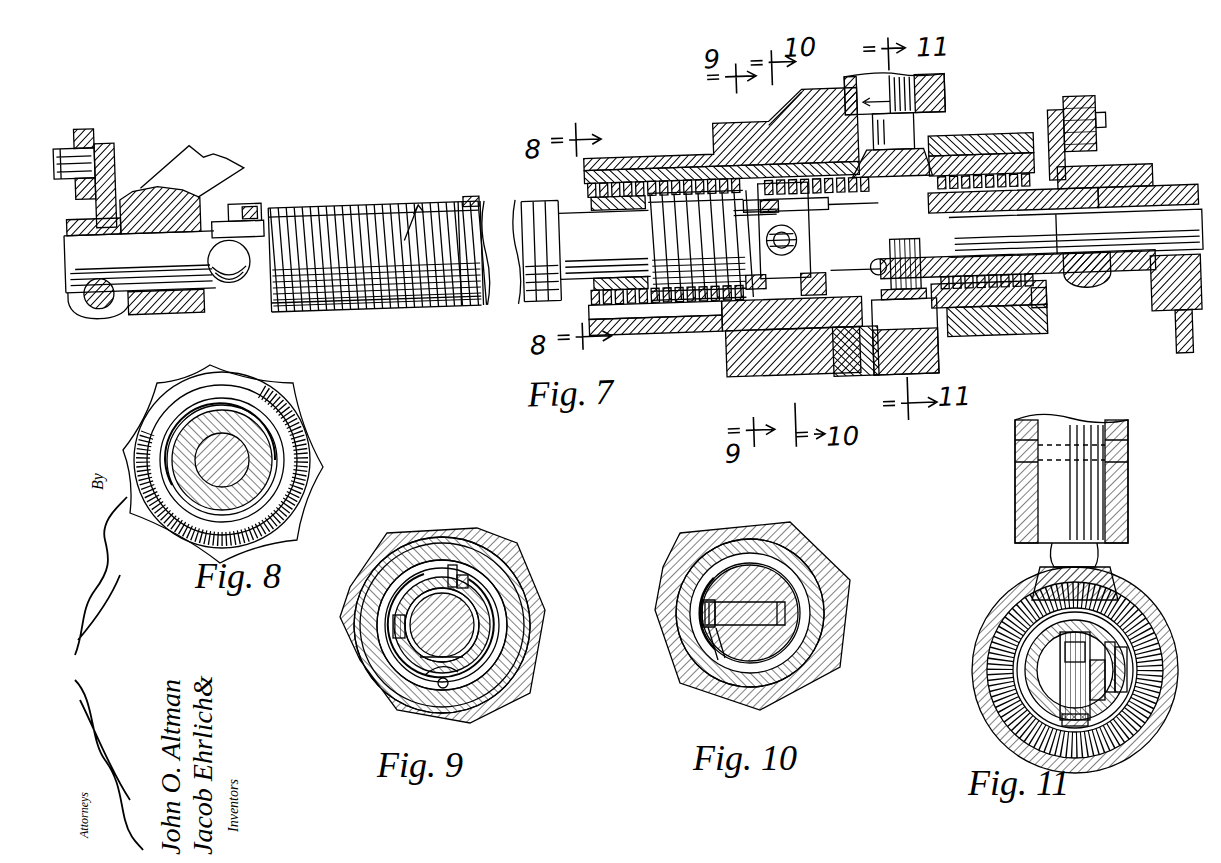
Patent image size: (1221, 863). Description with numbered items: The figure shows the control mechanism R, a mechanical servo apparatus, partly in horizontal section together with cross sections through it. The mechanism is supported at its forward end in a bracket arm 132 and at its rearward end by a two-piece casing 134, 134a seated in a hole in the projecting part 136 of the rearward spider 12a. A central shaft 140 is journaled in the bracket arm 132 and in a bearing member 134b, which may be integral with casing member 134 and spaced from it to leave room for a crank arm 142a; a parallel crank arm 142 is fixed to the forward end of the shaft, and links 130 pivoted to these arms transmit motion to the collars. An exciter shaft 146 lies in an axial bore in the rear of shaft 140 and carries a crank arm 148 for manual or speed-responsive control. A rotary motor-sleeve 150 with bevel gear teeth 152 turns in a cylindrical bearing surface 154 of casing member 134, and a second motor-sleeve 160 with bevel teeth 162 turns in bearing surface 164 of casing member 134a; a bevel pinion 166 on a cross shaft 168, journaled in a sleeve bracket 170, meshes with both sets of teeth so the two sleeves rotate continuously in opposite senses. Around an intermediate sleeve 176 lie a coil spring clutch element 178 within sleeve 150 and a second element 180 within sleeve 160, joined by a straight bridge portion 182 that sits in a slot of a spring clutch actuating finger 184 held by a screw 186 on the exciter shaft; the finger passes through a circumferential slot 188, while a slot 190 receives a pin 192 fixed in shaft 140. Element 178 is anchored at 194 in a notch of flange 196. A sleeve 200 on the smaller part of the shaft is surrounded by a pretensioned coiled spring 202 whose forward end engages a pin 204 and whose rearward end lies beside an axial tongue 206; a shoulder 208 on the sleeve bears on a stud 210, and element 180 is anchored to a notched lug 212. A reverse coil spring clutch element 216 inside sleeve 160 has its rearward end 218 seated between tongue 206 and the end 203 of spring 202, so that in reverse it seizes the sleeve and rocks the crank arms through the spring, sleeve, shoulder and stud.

In FIG. 7, the rearward spider 12a is at (850, 365).
In FIG. 7, the link 130 is at (90, 128).
In FIG. 7, the bracket arm 132 is at (158, 200).
In FIG. 7, the casing member 134 is at (1040, 330).
In FIG. 11, the casing member 134 is at (1160, 598).
In FIG. 7, the casing member 134a is at (745, 372).
In FIG. 9, the casing member 134a is at (492, 552).
In FIG. 10, the casing member 134a is at (690, 575).
In FIG. 7, the bearing member 134b is at (1140, 228).
In FIG. 7, the projecting part 136 is at (715, 150).
In FIG. 8, the projecting part 136 is at (280, 385).
In FIG. 9, the projecting part 136 is at (500, 700).
In FIG. 10, the projecting part 136 is at (835, 675).
In FIG. 7, the central shaft 140 is at (180, 272).
In FIG. 8, the central shaft 140 is at (240, 460).
In FIG. 9, the central shaft 140 is at (425, 640).
In FIG. 10, the central shaft 140 is at (775, 597).
In FIG. 11, the central shaft 140 is at (1030, 655).
In FIG. 7, the crank arm 142 is at (110, 150).
In FIG. 7, the crank arm 142a is at (1060, 141).
In FIG. 7, the exciter shaft 146 is at (1165, 320).
In FIG. 11, the exciter shaft 146 is at (1052, 668).
In FIG. 7, the crank arm 148 is at (1182, 388).
In FIG. 7, the rotary motor-sleeve 150 is at (1020, 364).
In FIG. 7, the bevel gear teeth 152 is at (990, 335).
In FIG. 11, the bevel gear teeth 152 is at (1150, 628).
In FIG. 7, the cylindrical bearing surface 154 is at (1045, 330).
In FIG. 7, the rotary motor-sleeve 160 is at (770, 335).
In FIG. 9, the rotary motor-sleeve 160 is at (500, 580).
In FIG. 10, the rotary motor-sleeve 160 is at (695, 590).
In FIG. 7, the bevel teeth 162 is at (880, 360).
In FIG. 7, the cylindrical bearing surface 164 is at (655, 322).
In FIG. 7, the bevel pinion 166 is at (930, 165).
In FIG. 11, the bevel pinion 166 is at (1100, 575).
In FIG. 7, the cross shaft 168 is at (925, 101).
In FIG. 11, the cross shaft 168 is at (1045, 492).
In FIG. 7, the sleeve bracket 170 is at (945, 115).
In FIG. 11, the sleeve bracket 170 is at (1120, 520).
In FIG. 7, the intermediate sleeve 176 is at (1005, 200).
In FIG. 9, the intermediate sleeve 176 is at (490, 640).
In FIG. 10, the intermediate sleeve 176 is at (790, 585).
In FIG. 11, the intermediate sleeve 176 is at (1020, 630).
In FIG. 7, the coil spring clutch element 178 is at (950, 170).
In FIG. 11, the coil spring clutch element 178 is at (1135, 655).
In FIG. 7, the coil spring clutch element 180 is at (800, 122).
In FIG. 9, the coil spring clutch element 180 is at (443, 690).
In FIG. 10, the coil spring clutch element 180 is at (702, 613).
In FIG. 7, the bridge portion 182 is at (905, 325).
In FIG. 11, the bridge portion 182 is at (1080, 724).
In FIG. 7, the spring clutch actuating finger 184 is at (915, 285).
In FIG. 11, the spring clutch actuating finger 184 is at (1060, 695).
In FIG. 7, the screw 186 is at (877, 284).
In FIG. 11, the screw 186 is at (1110, 680).
In FIG. 11, the slot 188 is at (1120, 660).
In FIG. 7, the slot 190 is at (782, 247).
In FIG. 10, the slot 190 is at (708, 628).
In FIG. 7, the pin 192 is at (812, 318).
In FIG. 9, the pin 192 is at (393, 624).
In FIG. 10, the pin 192 is at (706, 630).
In FIG. 7, the anchorage 194 is at (1100, 312).
In FIG. 7, the flange 196 is at (1085, 210).
In FIG. 7, the sleeve 200 is at (520, 225).
In FIG. 8, the sleeve 200 is at (265, 432).
In FIG. 9, the sleeve 200 is at (475, 618).
In FIG. 7, the coiled spring 202 is at (330, 240).
In FIG. 8, the coiled spring 202 is at (272, 458).
In FIG. 7, the end of spring 203 is at (740, 230).
In FIG. 9, the end of spring 203 is at (463, 575).
In FIG. 7, the pin 204 is at (256, 209).
In FIG. 7, the axial tongue 206 is at (792, 205).
In FIG. 9, the axial tongue 206 is at (412, 598).
In FIG. 7, the shoulder 208 is at (230, 225).
In FIG. 7, the stud 210 is at (229, 278).
In FIG. 7, the notched lug 212 is at (752, 310).
In FIG. 9, the notched lug 212 is at (430, 668).
In FIG. 7, the reverse coil spring clutch element 216 is at (622, 194).
In FIG. 8, the reverse coil spring clutch element 216 is at (290, 455).
In FIG. 9, the reverse coil spring clutch element 216 is at (410, 578).
In FIG. 7, the rearward end of reverse clutch element 218 is at (765, 222).
In FIG. 9, the rearward end of reverse clutch element 218 is at (450, 565).
In FIG. 7, the control mechanism R is at (418, 214).